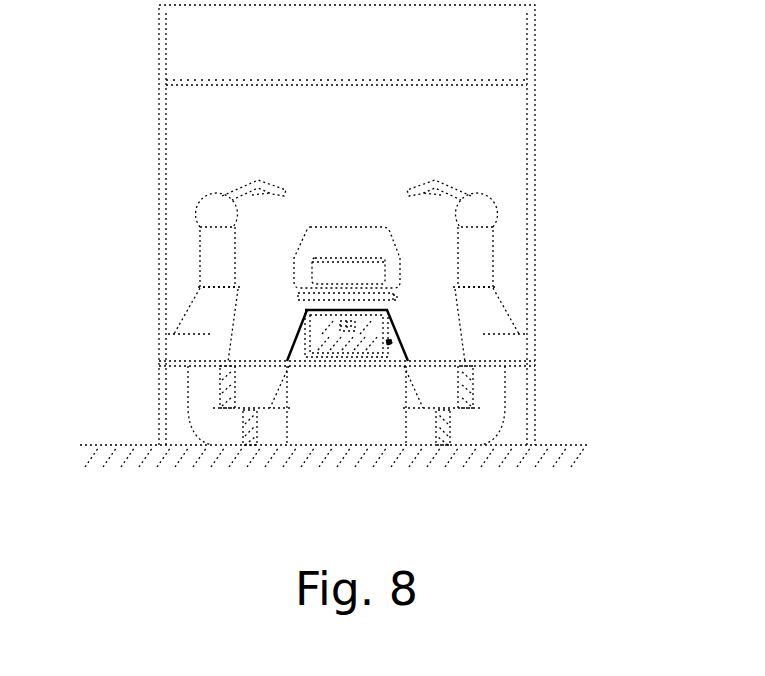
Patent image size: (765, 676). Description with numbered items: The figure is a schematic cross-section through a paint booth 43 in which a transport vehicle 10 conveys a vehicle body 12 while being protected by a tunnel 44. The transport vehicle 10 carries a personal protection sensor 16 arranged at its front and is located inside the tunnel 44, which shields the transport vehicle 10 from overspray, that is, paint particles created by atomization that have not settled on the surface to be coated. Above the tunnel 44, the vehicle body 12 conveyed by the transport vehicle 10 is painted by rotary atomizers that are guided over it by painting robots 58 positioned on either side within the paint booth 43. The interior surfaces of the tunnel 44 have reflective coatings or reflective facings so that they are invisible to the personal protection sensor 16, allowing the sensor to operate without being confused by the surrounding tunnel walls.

The paint booth 43 is at (160, 142).
The painting robot 58 is at (197, 262).
The vehicle body 12 is at (352, 227).
The tunnel 44 is at (302, 333).
The personal protection sensor 16 is at (353, 332).
The transport vehicle 10 is at (391, 342).